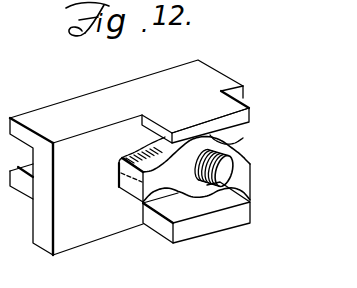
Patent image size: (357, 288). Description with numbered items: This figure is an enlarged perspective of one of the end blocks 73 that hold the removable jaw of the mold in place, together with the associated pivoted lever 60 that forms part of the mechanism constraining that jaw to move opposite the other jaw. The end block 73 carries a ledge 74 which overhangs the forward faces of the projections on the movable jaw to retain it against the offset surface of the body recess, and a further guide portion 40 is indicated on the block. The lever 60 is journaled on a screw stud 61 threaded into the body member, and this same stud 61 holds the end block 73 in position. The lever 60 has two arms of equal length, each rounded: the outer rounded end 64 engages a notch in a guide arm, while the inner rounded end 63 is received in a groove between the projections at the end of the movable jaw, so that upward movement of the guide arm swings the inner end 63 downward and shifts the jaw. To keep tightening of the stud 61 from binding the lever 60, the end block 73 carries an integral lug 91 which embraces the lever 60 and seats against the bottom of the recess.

The end block 73 is at (146, 151).
The ledge 74 is at (238, 88).
The guide flange 40 is at (246, 110).
The pivoted lever 60 is at (158, 152).
The rounded end 64 is at (117, 172).
The rounded end 63 is at (243, 138).
The stud 61 is at (218, 172).
The lug 91 is at (227, 218).